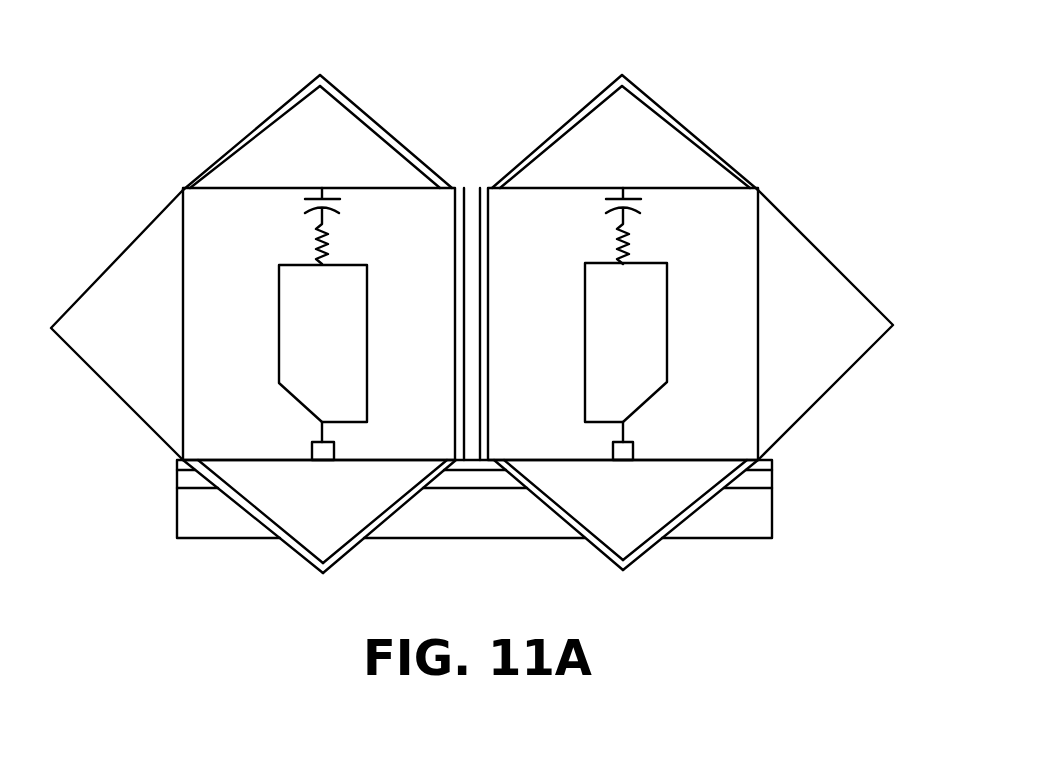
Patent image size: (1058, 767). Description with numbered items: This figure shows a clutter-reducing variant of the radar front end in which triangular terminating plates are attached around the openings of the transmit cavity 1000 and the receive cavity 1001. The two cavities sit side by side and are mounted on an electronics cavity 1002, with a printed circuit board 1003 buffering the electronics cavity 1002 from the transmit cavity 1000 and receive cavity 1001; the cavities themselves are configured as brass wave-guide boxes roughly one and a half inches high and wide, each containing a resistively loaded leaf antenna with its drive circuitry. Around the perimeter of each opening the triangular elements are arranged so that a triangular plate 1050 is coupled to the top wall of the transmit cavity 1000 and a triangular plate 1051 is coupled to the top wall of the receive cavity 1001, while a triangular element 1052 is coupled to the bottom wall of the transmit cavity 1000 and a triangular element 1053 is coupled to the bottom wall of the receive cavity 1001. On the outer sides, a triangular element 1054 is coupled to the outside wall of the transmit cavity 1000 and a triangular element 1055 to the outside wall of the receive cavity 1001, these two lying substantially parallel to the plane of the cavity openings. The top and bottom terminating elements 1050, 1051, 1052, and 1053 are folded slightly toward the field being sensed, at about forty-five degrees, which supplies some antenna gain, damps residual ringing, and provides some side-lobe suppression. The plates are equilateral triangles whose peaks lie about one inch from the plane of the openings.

The transmit cavity 1000 is at (265, 332).
The receive cavity 1001 is at (690, 337).
The electronics cavity 1002 is at (772, 505).
The printed circuit board 1003 is at (772, 473).
The triangular plate 1050 is at (390, 132).
The triangular plate 1051 is at (557, 130).
The triangular element 1052 is at (288, 545).
The triangular element 1053 is at (652, 547).
The triangular element 1054 is at (137, 240).
The triangular element 1055 is at (830, 260).